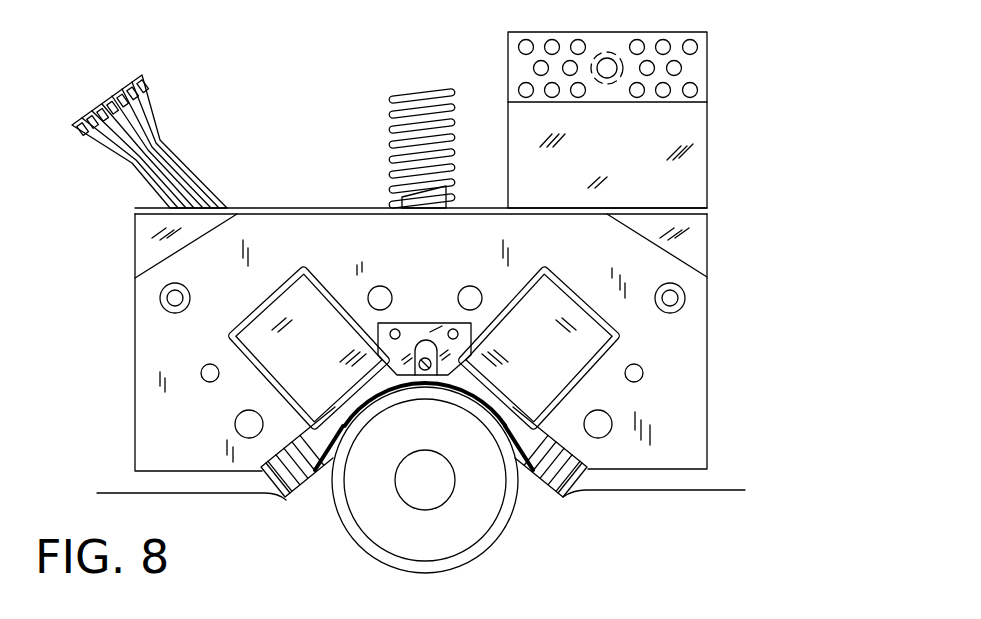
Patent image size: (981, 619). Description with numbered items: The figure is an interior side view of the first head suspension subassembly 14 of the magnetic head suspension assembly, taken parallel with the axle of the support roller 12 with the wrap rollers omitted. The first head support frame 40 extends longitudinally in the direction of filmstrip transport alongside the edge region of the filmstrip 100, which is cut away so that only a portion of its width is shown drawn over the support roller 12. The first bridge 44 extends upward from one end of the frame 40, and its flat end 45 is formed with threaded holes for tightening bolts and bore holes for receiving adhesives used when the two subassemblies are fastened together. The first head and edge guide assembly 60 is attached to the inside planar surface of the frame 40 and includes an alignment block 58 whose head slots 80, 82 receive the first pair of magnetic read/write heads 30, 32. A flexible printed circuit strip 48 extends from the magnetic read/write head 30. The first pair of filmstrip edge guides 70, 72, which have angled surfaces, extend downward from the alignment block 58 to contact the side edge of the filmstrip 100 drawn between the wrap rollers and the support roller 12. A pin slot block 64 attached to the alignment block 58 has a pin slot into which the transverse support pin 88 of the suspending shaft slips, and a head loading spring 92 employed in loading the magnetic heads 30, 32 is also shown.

The first head suspension subassembly 14 is at (760, 54).
The end of bridge 45 is at (508, 60).
The first bridge 44 is at (708, 157).
The first head support frame 40 is at (700, 238).
The first head and edge guide assembly 60 is at (148, 241).
The alignment block 58 is at (712, 310).
The flexible printed circuit strip 48 is at (172, 130).
The head loading spring 92 is at (417, 93).
The transverse support pin 88 is at (422, 323).
The pin slot block 64 is at (410, 323).
The head slot 80 is at (231, 318).
The head slot 82 is at (617, 318).
The magnetic read/write head 30 is at (268, 372).
The magnetic read/write head 32 is at (590, 372).
The filmstrip edge guide 70 is at (286, 503).
The filmstrip edge guide 72 is at (564, 500).
The support roller 12 is at (362, 548).
The filmstrip 100 is at (743, 490).